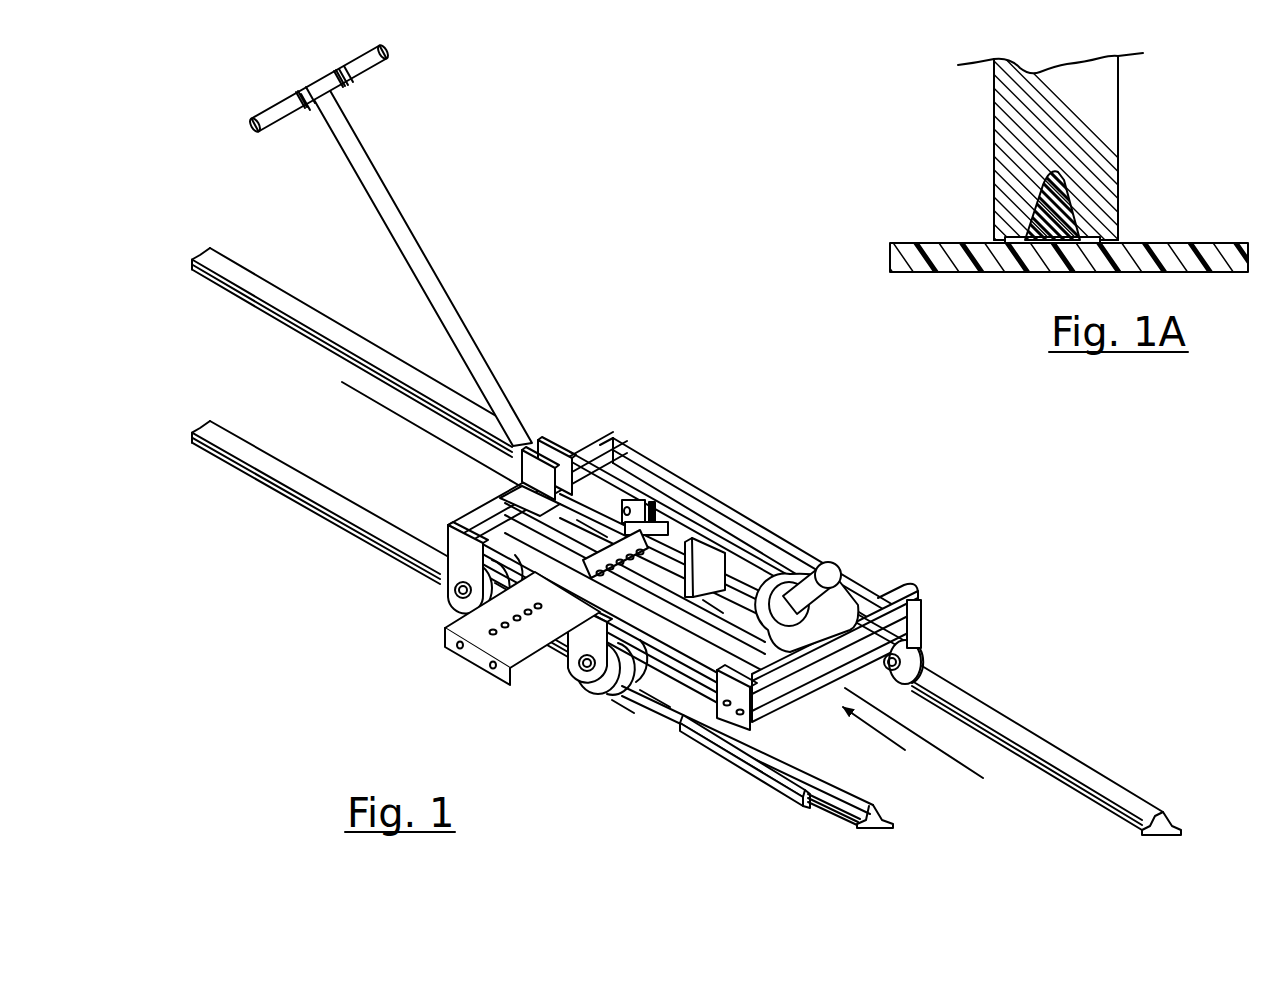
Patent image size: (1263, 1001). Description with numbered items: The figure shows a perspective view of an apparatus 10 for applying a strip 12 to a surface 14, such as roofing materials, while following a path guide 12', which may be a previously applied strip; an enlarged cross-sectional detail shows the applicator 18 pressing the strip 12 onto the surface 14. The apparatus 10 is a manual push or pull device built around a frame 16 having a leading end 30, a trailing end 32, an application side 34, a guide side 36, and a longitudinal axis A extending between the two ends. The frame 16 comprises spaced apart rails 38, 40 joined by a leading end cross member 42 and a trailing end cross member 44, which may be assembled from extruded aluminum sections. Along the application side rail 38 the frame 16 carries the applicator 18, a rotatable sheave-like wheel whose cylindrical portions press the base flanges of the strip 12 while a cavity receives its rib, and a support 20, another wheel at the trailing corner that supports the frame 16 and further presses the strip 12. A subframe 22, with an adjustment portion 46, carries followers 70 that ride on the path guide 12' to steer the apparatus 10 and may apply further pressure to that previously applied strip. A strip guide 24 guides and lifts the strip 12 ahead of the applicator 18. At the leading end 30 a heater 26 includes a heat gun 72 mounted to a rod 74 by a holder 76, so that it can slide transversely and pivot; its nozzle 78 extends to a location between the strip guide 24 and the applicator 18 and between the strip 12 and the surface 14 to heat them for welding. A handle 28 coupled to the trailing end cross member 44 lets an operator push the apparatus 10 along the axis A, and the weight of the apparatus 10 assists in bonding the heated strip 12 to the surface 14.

In FIG. 1, the apparatus 10 is at (585, 249).
In FIG. 1, the strip 12 is at (542, 634).
In FIG. 1A, the strip 12 is at (1043, 212).
In FIG. 1, the path guide 12' is at (686, 536).
In FIG. 1, the surface 14 is at (353, 452).
In FIG. 1A, the surface 14 is at (1178, 237).
In FIG. 1, the frame 16 is at (683, 544).
In FIG. 1, the applicator 18 is at (601, 699).
In FIG. 1A, the applicator 18 is at (1066, 126).
In FIG. 1, the support 20 is at (445, 601).
In FIG. 1, the subframe 22 is at (477, 671).
In FIG. 1, the strip guide 24 is at (709, 755).
In FIG. 1, the heater 26 is at (848, 568).
In FIG. 1, the handle 28 is at (278, 70).
In FIG. 1, the leading end 30 is at (889, 736).
In FIG. 1, the trailing end 32 is at (490, 487).
In FIG. 1, the application side 34 is at (670, 681).
In FIG. 1, the guide side 36 is at (723, 497).
In FIG. 1, the application side rail 38 is at (573, 580).
In FIG. 1, the rail 40 is at (772, 556).
In FIG. 1, the leading end cross member 42 is at (800, 683).
In FIG. 1, the trailing end cross member 44 is at (458, 497).
In FIG. 1, the adjustment portion 46 is at (612, 534).
In FIG. 1, the followers 70 is at (942, 657).
In FIG. 1, the heat gun 72 is at (826, 568).
In FIG. 1, the rod 74 is at (870, 595).
In FIG. 1, the holder 76 is at (836, 611).
In FIG. 1, the nozzle 78 is at (627, 718).
In FIG. 1, the longitudinal axis A is at (965, 778).